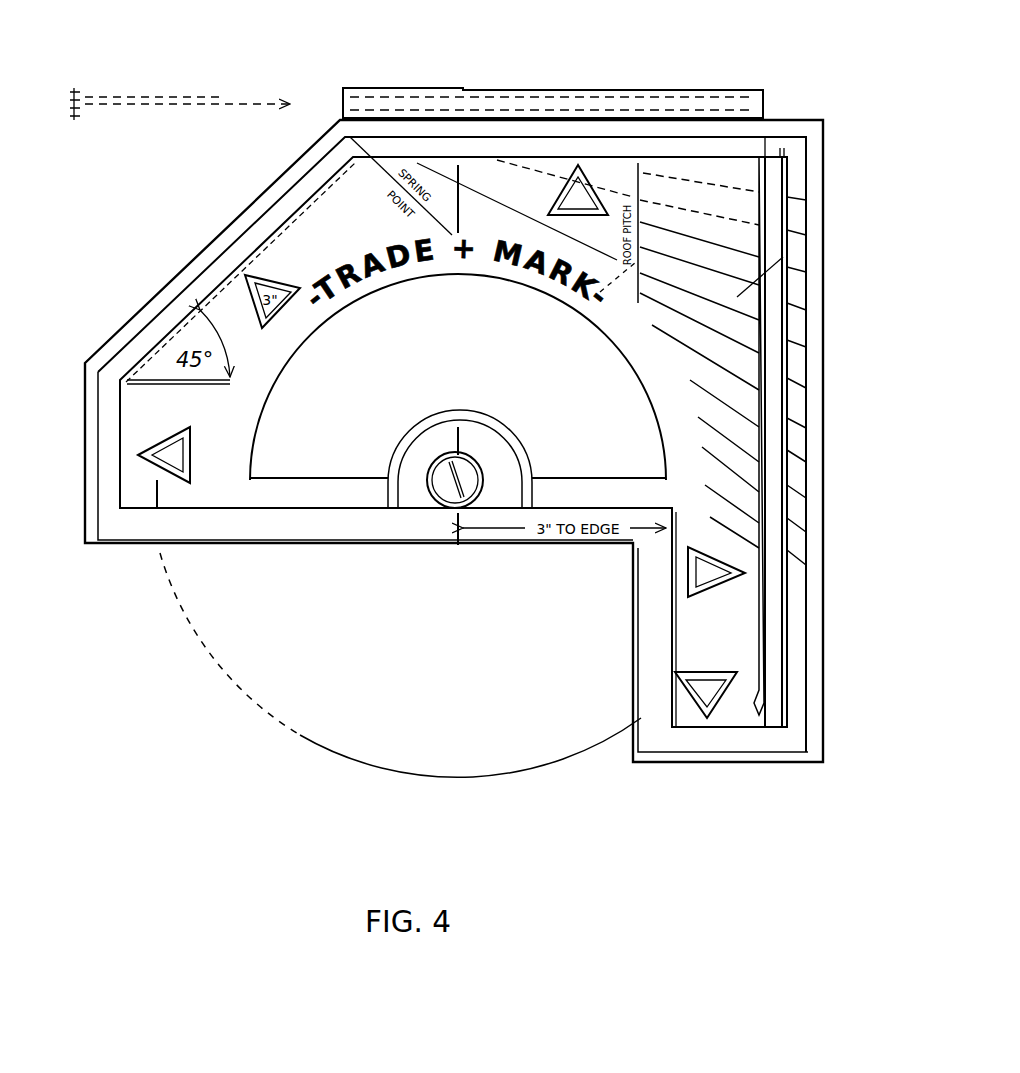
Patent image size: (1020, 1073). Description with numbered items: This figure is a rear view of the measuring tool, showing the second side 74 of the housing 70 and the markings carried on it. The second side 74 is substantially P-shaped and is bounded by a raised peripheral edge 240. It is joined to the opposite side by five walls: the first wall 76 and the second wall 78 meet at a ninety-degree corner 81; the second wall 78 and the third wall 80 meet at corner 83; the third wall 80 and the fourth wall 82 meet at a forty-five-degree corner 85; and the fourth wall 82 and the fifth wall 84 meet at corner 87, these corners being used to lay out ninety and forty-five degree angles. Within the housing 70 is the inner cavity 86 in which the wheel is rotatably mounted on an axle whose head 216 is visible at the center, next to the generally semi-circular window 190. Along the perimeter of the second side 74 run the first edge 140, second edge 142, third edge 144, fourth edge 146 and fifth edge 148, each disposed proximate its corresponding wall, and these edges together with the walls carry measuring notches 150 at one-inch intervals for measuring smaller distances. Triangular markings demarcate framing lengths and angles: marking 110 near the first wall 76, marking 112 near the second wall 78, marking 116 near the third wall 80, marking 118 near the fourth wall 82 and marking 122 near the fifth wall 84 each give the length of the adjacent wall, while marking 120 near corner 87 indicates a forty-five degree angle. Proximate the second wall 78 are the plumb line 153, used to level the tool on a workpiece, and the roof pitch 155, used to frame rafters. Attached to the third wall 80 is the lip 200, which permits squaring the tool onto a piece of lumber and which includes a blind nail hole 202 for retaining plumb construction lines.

The housing 70 is at (322, 200).
The second side 74 is at (307, 247).
The fourth edge 146 is at (233, 233).
The fourth wall 82 is at (125, 337).
The marking 120 is at (170, 327).
The marking 118 is at (215, 265).
The corner 87 is at (87, 363).
The window 190 is at (300, 407).
The marking 122 is at (147, 447).
The fifth edge 148 is at (87, 483).
The fifth wall 84 is at (85, 545).
The inner cavity 86 is at (135, 548).
The head 216 is at (440, 492).
The marking 116 is at (588, 170).
The marking 112 is at (742, 578).
The marking 110 is at (705, 700).
The measuring notches 150 is at (818, 470).
The plumb line 153 is at (760, 640).
The roof pitch 155 is at (790, 258).
The third edge 144 is at (782, 130).
The second edge 142 is at (816, 560).
The second wall 78 is at (822, 660).
The corner 81 is at (822, 762).
The first edge 140 is at (795, 762).
The first wall 76 is at (760, 762).
The raised peripheral edge 240 is at (670, 738).
The lip 200 is at (682, 106).
The blind nail hole 202 is at (353, 90).
The corner 85 is at (340, 118).
The third wall 80 is at (800, 118).
The corner 83 is at (825, 120).